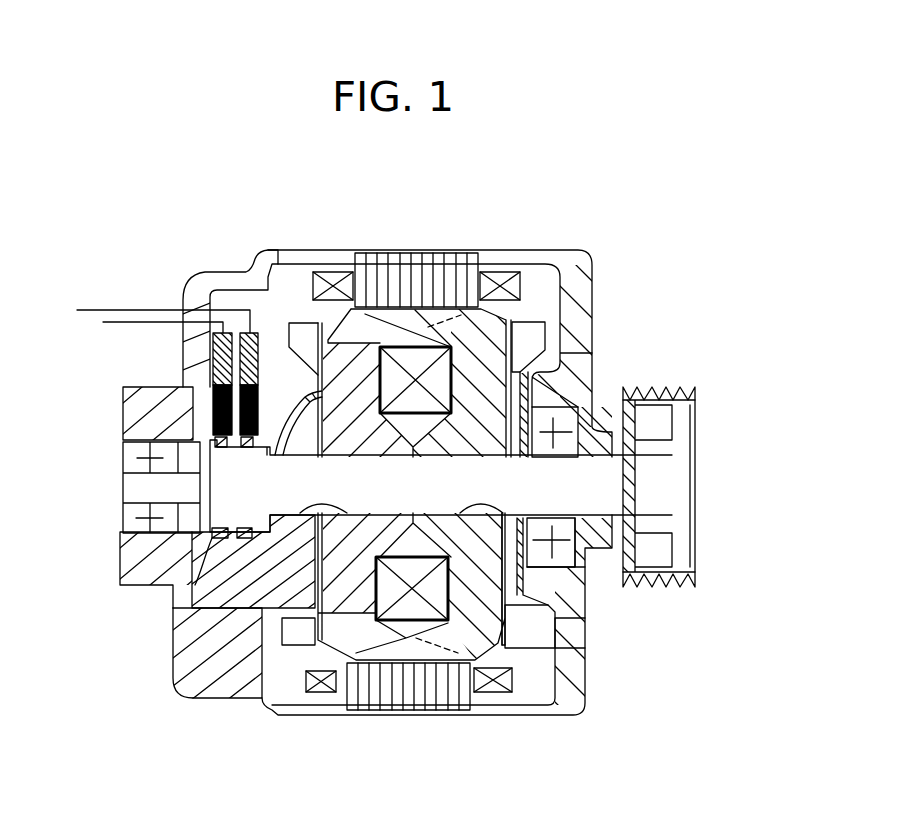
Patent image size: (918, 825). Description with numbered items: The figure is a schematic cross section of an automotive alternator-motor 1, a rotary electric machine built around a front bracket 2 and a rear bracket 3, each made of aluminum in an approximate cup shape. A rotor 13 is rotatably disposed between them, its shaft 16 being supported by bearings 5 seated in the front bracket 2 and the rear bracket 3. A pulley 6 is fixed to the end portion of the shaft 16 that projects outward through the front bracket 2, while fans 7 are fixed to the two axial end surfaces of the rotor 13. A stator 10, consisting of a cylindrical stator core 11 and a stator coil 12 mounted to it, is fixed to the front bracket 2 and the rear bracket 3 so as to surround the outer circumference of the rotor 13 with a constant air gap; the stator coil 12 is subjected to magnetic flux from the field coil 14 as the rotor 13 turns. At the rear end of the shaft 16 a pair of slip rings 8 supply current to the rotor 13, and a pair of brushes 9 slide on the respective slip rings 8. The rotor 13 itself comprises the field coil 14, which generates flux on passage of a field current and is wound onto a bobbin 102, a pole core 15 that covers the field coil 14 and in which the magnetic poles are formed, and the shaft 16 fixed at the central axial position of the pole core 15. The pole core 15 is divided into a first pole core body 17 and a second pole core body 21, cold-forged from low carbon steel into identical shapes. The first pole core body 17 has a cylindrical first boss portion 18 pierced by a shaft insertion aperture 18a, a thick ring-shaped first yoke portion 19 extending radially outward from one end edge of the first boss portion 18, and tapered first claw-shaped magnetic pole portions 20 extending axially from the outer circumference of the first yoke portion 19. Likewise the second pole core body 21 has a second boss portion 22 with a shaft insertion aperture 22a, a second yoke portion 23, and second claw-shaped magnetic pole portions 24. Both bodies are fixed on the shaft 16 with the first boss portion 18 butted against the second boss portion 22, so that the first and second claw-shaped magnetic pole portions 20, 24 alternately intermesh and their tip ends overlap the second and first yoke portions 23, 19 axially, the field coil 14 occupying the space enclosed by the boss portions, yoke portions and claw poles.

The automotive alternator-motor 1 is at (119, 162).
The front bracket 2 is at (585, 267).
The rear bracket 3 is at (222, 273).
The bearings 5 is at (573, 413).
The pulley 6 is at (663, 387).
The fans 7 is at (535, 338).
The slip rings 8 is at (175, 587).
The brushes 9 is at (237, 398).
The stator 10 is at (493, 768).
The stator core 11 is at (430, 700).
The stator coil 12 is at (493, 693).
The rotor 13 is at (495, 313).
The field coil 14 is at (410, 363).
The pole core 15 is at (400, 768).
The shaft 16 is at (618, 488).
The first pole core body 17 is at (420, 640).
The first boss portion 18 is at (535, 595).
The shaft insertion aperture 18a is at (535, 528).
The first yoke portion 19 is at (525, 622).
The first claw-shaped magnetic pole portions 20 is at (495, 662).
The second pole core body 21 is at (348, 619).
The second boss portion 22 is at (173, 657).
The shaft insertion aperture 22a is at (175, 635).
The second yoke portion 23 is at (315, 507).
The second claw-shaped magnetic pole portions 24 is at (315, 648).
The bobbin 102 is at (372, 362).